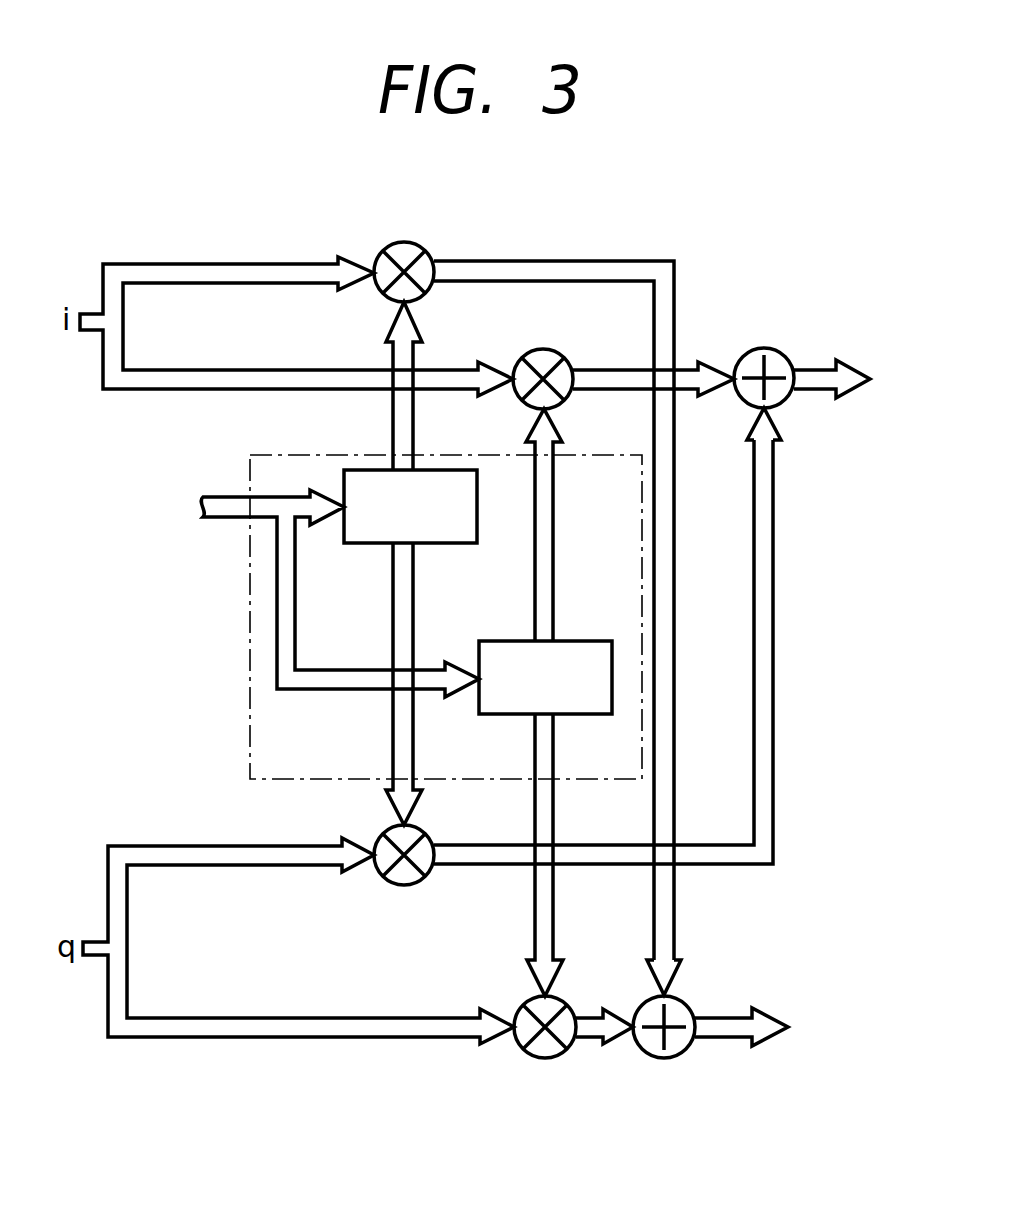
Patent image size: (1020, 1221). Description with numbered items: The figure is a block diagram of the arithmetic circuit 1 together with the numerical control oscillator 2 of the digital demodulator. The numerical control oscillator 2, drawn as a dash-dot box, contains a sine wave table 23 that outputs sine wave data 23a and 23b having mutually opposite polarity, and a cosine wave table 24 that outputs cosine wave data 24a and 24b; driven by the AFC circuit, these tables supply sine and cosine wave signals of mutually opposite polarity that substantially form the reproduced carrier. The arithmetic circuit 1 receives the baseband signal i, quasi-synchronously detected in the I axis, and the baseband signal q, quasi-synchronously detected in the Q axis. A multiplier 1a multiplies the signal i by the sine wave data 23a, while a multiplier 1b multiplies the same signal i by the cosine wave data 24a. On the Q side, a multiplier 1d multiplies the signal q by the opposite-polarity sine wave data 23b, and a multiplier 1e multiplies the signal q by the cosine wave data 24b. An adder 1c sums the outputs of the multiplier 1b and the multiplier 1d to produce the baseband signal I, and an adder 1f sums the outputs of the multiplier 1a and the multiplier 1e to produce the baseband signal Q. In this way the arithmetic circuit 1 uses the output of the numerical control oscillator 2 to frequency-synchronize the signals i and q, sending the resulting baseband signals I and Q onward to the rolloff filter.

The arithmetic circuit 1 is at (708, 338).
The multiplier 1a is at (404, 242).
The multiplier 1b is at (534, 352).
The adder 1c is at (763, 348).
The multiplier 1d is at (406, 886).
The multiplier 1e is at (527, 1000).
The adder 1f is at (645, 1000).
The numerical control oscillator 2 is at (350, 620).
The sine wave table 23 is at (367, 470).
The sine wave data 23a is at (414, 424).
The sine wave data 23b is at (393, 740).
The cosine wave table 24 is at (502, 641).
The cosine wave data 24a is at (553, 588).
The cosine wave data 24b is at (534, 756).